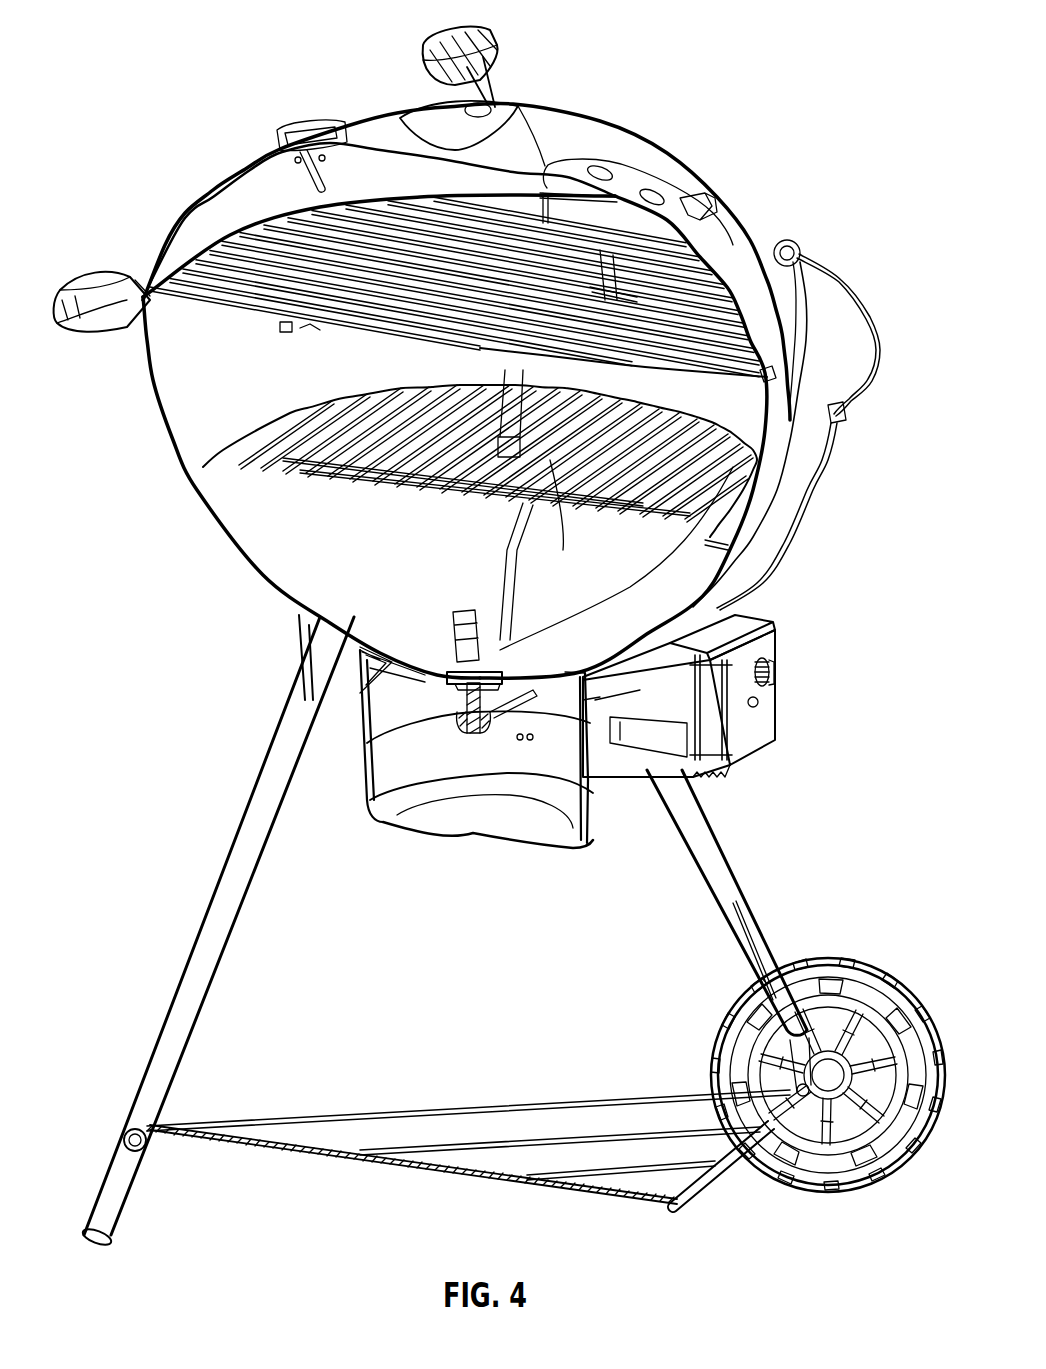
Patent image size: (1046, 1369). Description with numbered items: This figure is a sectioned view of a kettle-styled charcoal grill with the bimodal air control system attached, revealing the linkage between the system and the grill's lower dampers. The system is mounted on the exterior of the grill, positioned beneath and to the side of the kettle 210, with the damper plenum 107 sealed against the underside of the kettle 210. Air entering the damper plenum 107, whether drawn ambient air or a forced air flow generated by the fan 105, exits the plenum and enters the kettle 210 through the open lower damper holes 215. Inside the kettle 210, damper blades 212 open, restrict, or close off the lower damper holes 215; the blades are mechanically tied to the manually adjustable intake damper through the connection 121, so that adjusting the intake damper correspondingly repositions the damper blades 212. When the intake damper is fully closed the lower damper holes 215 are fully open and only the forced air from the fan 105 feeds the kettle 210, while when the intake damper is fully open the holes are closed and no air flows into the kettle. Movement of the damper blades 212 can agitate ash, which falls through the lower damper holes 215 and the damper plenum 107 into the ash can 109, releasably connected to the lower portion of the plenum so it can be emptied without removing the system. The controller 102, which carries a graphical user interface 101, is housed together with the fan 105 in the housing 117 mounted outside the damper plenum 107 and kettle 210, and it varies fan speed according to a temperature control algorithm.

The graphical user interface 101 is at (733, 717).
The controller 102 is at (770, 708).
The fan 105 is at (677, 742).
The damper plenum 107 is at (377, 713).
The ash can 109 is at (507, 820).
The housing 117 is at (745, 625).
The connection 121 is at (450, 703).
The kettle 210 is at (222, 540).
The damper blades 212 is at (527, 597).
The lower damper holes 215 is at (447, 643).